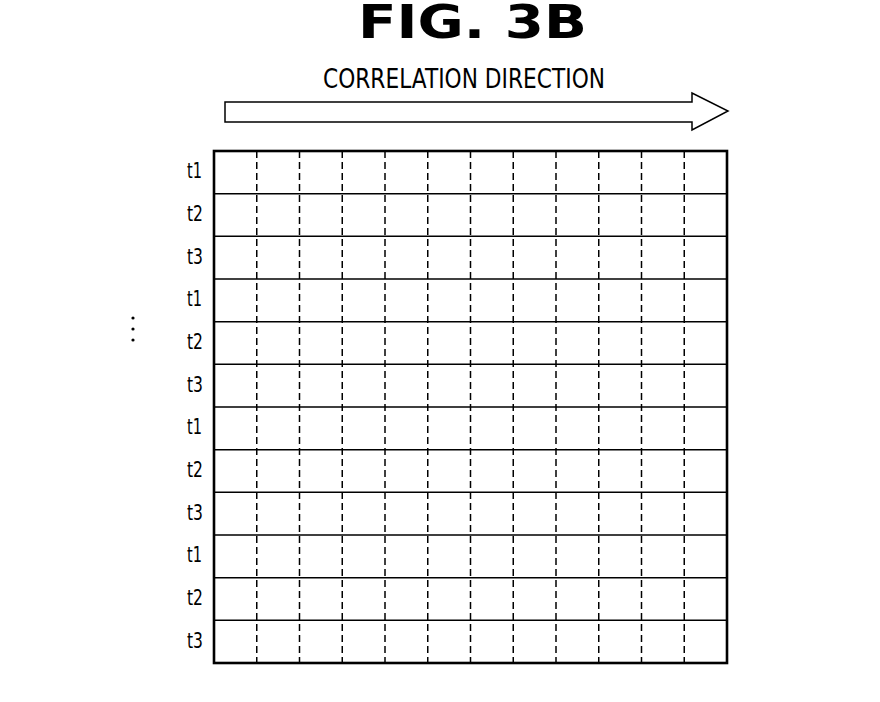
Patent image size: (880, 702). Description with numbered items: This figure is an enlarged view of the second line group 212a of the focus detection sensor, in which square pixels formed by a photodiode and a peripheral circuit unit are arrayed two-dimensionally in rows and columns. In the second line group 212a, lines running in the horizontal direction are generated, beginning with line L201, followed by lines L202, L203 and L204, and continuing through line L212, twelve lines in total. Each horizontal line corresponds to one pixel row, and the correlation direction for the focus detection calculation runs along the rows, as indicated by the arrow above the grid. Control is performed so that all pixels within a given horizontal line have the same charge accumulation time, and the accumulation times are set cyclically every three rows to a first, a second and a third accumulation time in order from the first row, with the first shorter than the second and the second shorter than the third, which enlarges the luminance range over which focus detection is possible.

The second line group 212a is at (390, 357).
The line L201 is at (419, 176).
The line L202 is at (419, 218).
The line L203 is at (419, 261).
The line L204 is at (419, 304).
The line L212 is at (419, 636).